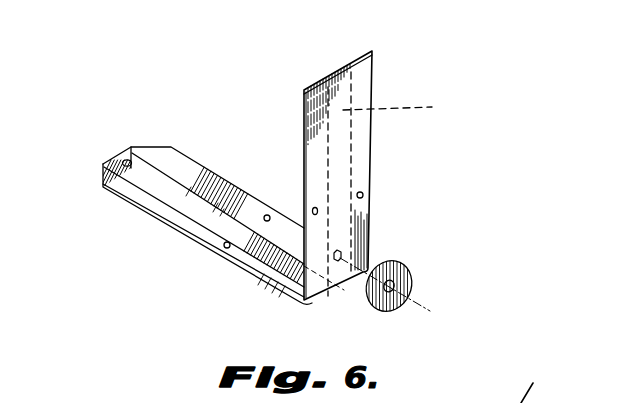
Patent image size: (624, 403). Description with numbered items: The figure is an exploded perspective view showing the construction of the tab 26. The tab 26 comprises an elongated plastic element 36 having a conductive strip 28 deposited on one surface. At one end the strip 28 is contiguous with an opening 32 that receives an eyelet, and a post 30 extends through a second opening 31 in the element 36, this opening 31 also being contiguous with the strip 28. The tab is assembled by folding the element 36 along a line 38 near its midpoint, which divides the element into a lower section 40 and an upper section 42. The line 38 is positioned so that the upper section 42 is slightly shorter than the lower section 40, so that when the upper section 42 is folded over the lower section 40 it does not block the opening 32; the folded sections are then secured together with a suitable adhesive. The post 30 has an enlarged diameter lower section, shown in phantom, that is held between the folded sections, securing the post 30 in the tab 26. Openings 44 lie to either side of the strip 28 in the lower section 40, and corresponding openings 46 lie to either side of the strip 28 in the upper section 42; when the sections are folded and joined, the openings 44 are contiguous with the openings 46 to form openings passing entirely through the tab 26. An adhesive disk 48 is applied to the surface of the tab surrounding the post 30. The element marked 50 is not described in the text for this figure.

The tab 26 is at (252, 82).
The conductive strip 28 is at (163, 177).
The post 30 is at (343, 249).
The second opening 31 is at (338, 258).
The opening 32 is at (123, 161).
The elongated plastic element 36 is at (197, 230).
The line 38 is at (320, 301).
The lower section 40 is at (203, 166).
The upper section 42 is at (373, 69).
The openings 44 is at (228, 242).
The openings 46 is at (318, 209).
The adhesive disk 48 is at (413, 277).
The support 50 is at (496, 393).